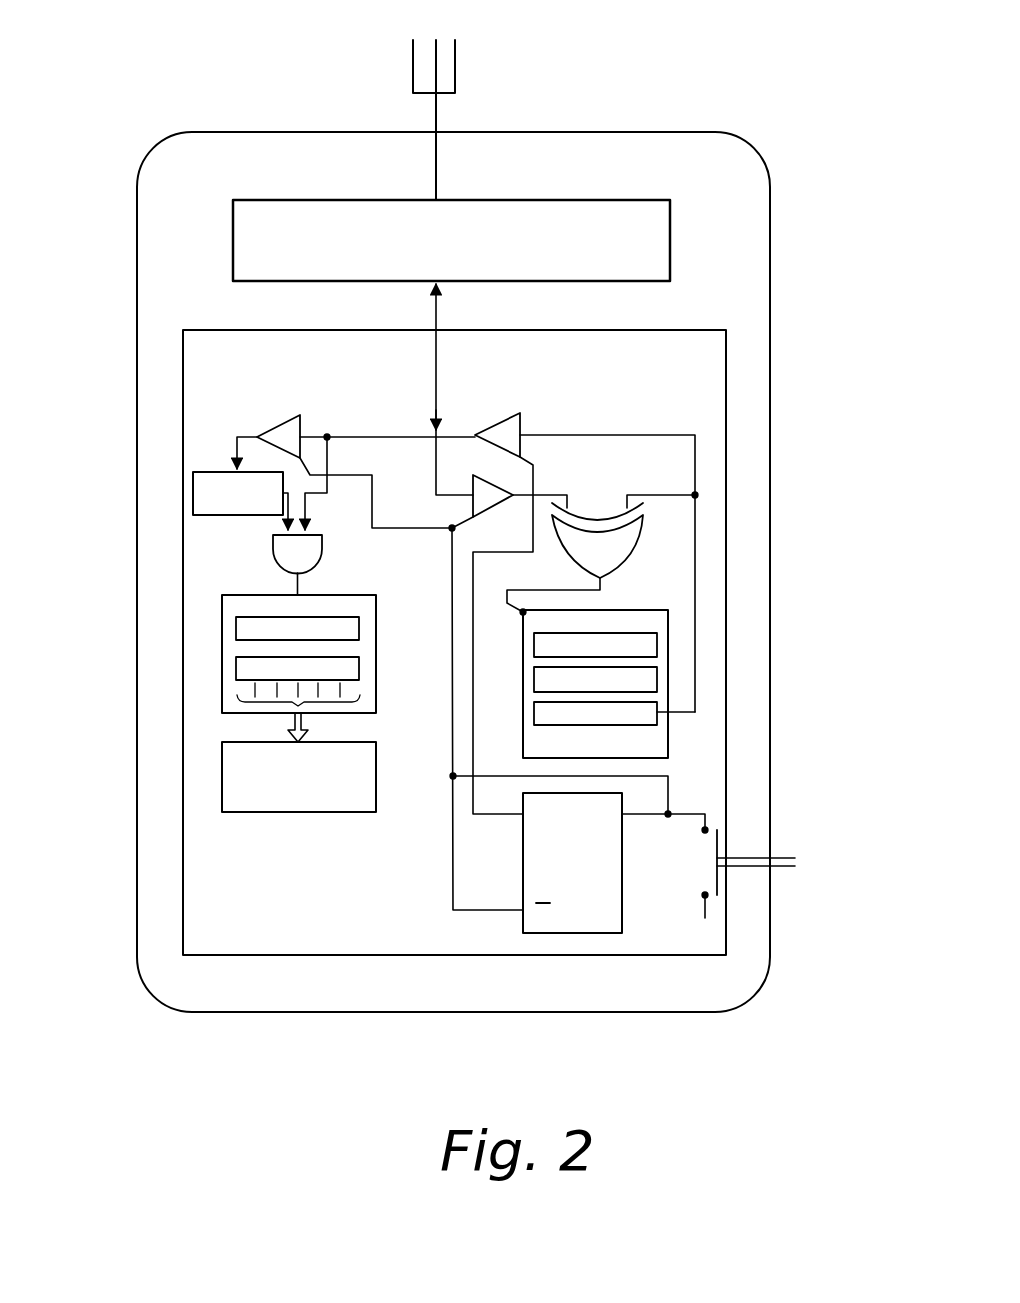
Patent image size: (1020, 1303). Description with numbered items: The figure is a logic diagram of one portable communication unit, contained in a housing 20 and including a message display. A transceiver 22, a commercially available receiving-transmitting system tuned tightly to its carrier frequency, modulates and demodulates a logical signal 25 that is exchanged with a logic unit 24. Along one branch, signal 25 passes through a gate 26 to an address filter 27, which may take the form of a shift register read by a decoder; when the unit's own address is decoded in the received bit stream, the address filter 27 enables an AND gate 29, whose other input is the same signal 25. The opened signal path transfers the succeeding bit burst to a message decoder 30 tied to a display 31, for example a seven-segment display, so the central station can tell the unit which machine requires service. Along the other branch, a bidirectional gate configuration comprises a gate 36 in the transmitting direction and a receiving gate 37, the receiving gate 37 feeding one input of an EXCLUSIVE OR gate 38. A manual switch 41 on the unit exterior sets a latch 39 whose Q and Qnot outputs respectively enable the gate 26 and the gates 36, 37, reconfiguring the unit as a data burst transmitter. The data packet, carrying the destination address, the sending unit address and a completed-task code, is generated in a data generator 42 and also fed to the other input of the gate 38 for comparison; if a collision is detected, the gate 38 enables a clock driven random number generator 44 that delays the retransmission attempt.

The housing 20 is at (402, 1012).
The transceiver 22 is at (670, 233).
The logic unit 24 is at (718, 377).
The logical signal 25 is at (440, 313).
The gate 26 is at (280, 420).
The address filter 27 is at (193, 503).
The AND gate 29 is at (273, 548).
The message decoder 30 is at (376, 647).
The display 31 is at (290, 812).
The gate 36 is at (522, 416).
The receiving gate 37 is at (488, 512).
The EXCLUSIVE OR gate 38 is at (635, 538).
The latch 39 is at (590, 933).
The manual switch 41 is at (788, 852).
The data generator 42 is at (660, 658).
The random number generator 44 is at (655, 722).